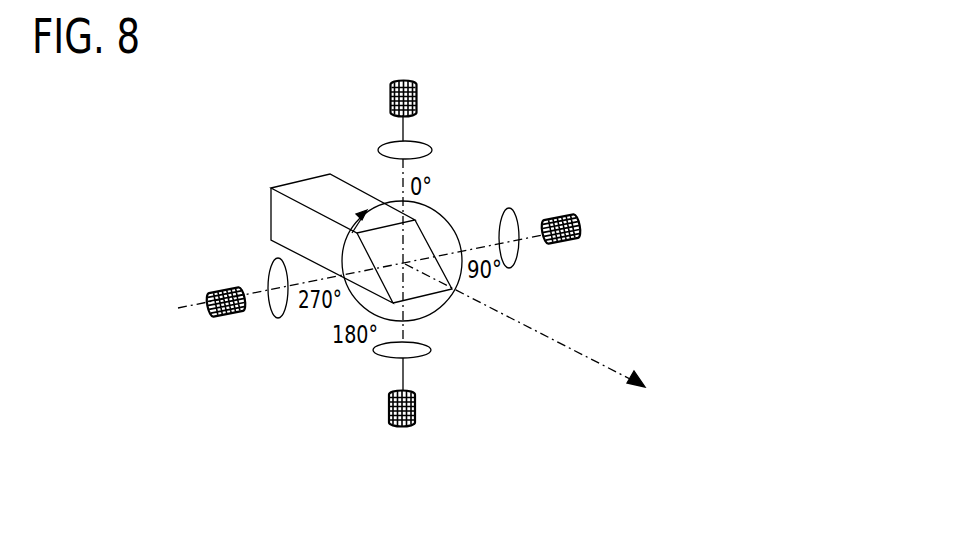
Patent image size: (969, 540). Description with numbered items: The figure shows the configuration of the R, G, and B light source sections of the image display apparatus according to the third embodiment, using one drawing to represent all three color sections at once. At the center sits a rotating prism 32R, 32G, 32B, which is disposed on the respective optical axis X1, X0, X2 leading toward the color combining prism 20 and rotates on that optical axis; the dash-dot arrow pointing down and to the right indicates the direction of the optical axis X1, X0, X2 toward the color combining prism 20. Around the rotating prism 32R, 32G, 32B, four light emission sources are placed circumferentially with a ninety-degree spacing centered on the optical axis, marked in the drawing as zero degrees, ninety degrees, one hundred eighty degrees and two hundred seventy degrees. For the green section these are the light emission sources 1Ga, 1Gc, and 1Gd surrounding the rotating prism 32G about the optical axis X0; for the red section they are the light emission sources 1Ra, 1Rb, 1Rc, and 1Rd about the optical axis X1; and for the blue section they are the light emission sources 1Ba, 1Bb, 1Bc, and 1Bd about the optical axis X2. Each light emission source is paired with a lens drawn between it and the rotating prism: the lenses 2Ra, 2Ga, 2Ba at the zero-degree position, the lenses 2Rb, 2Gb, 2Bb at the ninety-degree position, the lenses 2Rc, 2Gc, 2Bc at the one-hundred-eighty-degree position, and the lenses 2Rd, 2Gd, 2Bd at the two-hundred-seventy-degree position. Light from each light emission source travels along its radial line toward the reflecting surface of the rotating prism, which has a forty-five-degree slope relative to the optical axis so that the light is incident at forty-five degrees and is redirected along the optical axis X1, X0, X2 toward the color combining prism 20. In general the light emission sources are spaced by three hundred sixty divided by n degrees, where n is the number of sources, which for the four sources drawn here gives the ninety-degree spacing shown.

The light emission source 1Ra is at (499, 99).
The light emission source 1Ga is at (499, 99).
The light emission source 1Ba is at (418, 95).
The lens 2Ra is at (498, 150).
The lens 2Ga is at (498, 150).
The lens 2Ba is at (432, 150).
The light emission source 1Rb is at (652, 237).
The light emission source 1Bb is at (580, 236).
The lens 2Rb is at (603, 224).
The lens 2Gb is at (603, 224).
The lens 2Bb is at (514, 214).
The light emission source 1Rc is at (310, 415).
The light emission source 1Gc is at (310, 415).
The light emission source 1Bc is at (388, 405).
The lens 2Rc is at (309, 364).
The lens 2Gc is at (309, 364).
The lens 2Bc is at (376, 352).
The light emission source 1Rd is at (151, 276).
The light emission source 1Gd is at (151, 276).
The light emission source 1Bd is at (220, 288).
The lens 2Rd is at (185, 245).
The lens 2Gd is at (185, 245).
The lens 2Bd is at (273, 257).
The rotating prism 32R is at (332, 204).
The rotating prism 32G is at (332, 204).
The rotating prism 32B is at (308, 185).
The color combining prism 20 is at (620, 343).
The optical axis X1 is at (620, 343).
The optical axis X0 is at (620, 343).
The optical axis X2 is at (620, 343).